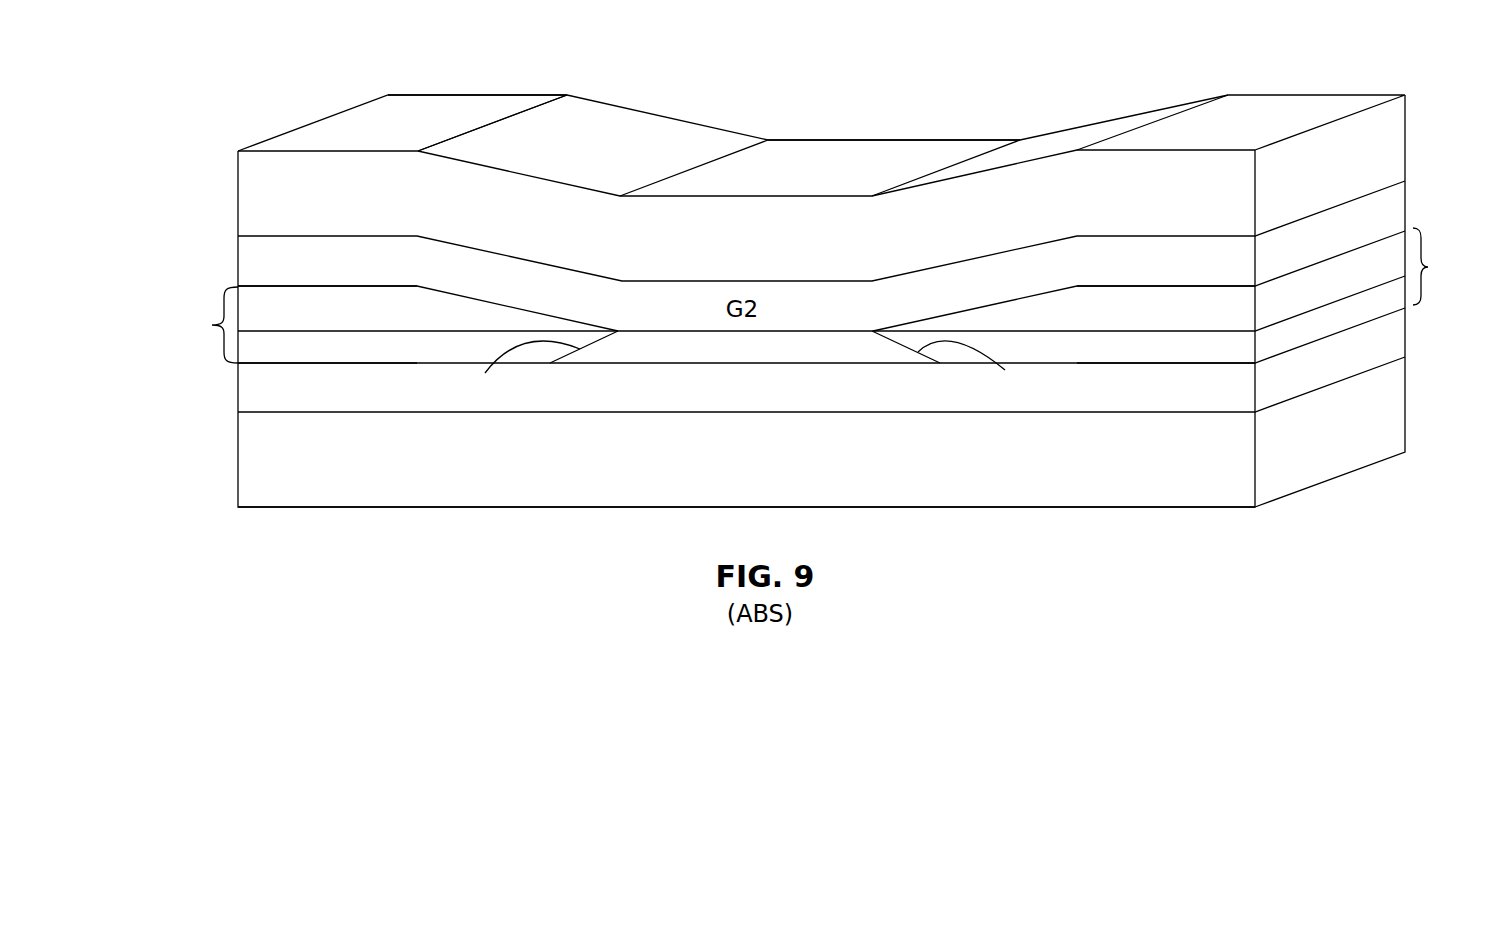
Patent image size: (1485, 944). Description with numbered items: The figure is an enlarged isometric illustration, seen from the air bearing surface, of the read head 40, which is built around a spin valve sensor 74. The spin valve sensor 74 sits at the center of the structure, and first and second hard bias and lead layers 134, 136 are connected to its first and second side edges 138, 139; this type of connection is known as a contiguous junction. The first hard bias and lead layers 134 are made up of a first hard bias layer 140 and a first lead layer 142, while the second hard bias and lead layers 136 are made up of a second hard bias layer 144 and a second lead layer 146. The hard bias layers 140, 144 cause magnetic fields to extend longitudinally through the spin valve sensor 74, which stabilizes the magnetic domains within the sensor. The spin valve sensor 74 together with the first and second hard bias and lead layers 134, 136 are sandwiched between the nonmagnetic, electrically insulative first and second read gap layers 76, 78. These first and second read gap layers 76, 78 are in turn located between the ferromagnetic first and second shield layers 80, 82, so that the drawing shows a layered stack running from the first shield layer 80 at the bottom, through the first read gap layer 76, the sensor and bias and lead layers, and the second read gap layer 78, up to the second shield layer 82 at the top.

The read head 40 is at (917, 95).
The spin valve sensor 74 is at (656, 330).
The first read gap layer 76 is at (628, 405).
The second read gap layer 78 is at (482, 268).
The first shield layer 80 is at (410, 485).
The second shield layer 82 is at (675, 127).
The first hard bias and lead layers 134 is at (202, 325).
The second hard bias and lead layers 136 is at (1445, 266).
The first side edge 138 is at (520, 371).
The second side edge 139 is at (975, 370).
The first hard bias layer 140 is at (282, 350).
The first lead layer 142 is at (282, 300).
The second hard bias layer 144 is at (1203, 348).
The second lead layer 146 is at (1203, 297).